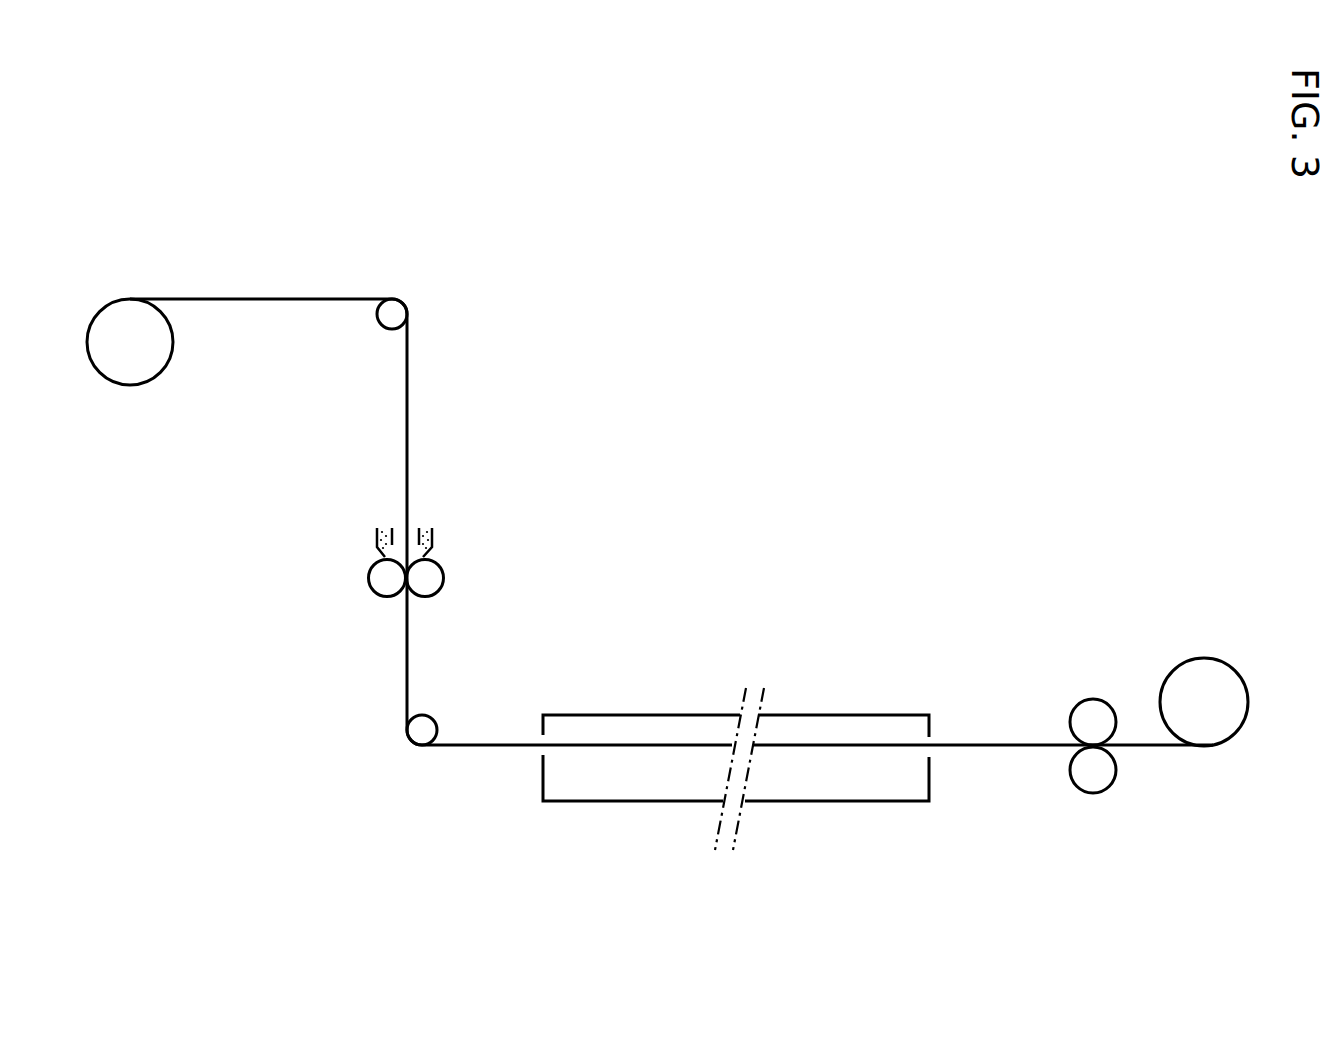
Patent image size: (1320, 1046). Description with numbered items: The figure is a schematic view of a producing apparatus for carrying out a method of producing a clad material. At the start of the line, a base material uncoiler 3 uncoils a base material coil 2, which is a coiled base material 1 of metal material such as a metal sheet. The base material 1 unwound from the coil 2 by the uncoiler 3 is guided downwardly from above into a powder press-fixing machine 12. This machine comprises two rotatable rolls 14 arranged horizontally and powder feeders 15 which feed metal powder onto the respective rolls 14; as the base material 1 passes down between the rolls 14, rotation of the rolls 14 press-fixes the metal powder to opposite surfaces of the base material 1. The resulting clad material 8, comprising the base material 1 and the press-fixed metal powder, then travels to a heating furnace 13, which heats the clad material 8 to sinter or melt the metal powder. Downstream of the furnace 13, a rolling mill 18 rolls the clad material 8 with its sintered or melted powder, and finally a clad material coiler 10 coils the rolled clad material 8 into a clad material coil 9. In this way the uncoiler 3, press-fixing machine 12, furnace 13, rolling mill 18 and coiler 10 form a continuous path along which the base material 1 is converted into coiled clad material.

The base material 1 is at (283, 298).
The base material coil 2 is at (145, 368).
The base material uncoiler 3 is at (117, 390).
The clad material 8 is at (1026, 743).
The clad material coil 9 is at (1192, 680).
The clad material coiler 10 is at (1223, 658).
The powder press-fixing machine 12 is at (430, 545).
The heating furnace 13 is at (860, 713).
The rotatable rolls 14 is at (378, 583).
The powder feeders 15 is at (373, 538).
The rolling mill 18 is at (1100, 695).